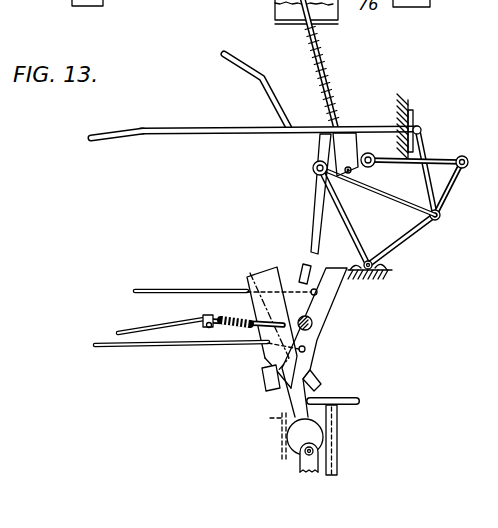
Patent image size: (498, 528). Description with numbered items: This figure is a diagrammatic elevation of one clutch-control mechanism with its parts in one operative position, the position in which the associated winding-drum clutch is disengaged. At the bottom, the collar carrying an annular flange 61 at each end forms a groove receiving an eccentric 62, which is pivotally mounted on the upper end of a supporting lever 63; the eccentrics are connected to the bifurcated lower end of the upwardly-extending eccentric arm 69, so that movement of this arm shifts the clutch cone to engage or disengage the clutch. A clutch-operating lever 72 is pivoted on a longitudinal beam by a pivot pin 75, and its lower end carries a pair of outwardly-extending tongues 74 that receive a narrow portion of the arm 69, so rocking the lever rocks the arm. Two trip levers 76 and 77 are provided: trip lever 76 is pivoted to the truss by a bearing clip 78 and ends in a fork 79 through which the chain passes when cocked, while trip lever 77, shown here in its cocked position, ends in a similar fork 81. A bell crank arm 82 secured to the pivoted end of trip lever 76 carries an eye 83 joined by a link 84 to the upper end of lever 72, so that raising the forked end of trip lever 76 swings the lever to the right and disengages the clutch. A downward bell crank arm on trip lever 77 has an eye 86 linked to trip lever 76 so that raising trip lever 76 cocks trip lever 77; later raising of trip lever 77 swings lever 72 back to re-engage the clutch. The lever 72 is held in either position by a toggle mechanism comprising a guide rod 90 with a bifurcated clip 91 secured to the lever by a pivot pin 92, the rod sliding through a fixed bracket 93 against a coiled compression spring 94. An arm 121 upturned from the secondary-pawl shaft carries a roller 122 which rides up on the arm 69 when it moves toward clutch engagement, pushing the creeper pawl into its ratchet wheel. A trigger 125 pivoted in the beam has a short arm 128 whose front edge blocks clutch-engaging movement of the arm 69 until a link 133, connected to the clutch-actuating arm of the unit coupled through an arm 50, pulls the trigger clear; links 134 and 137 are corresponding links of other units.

The arm 50 is at (200, 292).
The annular flange 61 is at (281, 425).
The eccentric 62 is at (289, 436).
The supporting lever 63 is at (303, 464).
The eccentric arm 69 is at (290, 391).
The clutch-operating lever 72 is at (318, 222).
The tongue 74 is at (262, 378).
The pivot pin 75 is at (316, 323).
The trip lever 76 is at (231, 129).
The trip lever 77 is at (312, 177).
The bearing clip 78 is at (381, 266).
The fork 79 is at (123, 134).
The fork 81 is at (254, 63).
The bell crank arm 82 is at (405, 233).
The eye 83 is at (467, 157).
The link 84 is at (401, 166).
The eye 86 is at (420, 126).
The guide rod 90 is at (321, 86).
The bifurcated clip 91 is at (333, 144).
The pivot pin 92 is at (348, 168).
The fixed bracket 93 is at (275, 15).
The coiled compression spring 94 is at (309, 41).
The arm 121 is at (338, 441).
The roller 122 is at (354, 398).
The trigger 125 is at (203, 328).
The short arm 128 is at (261, 333).
The link 133 is at (171, 326).
The link 134 is at (200, 345).
The link 137 is at (241, 316).